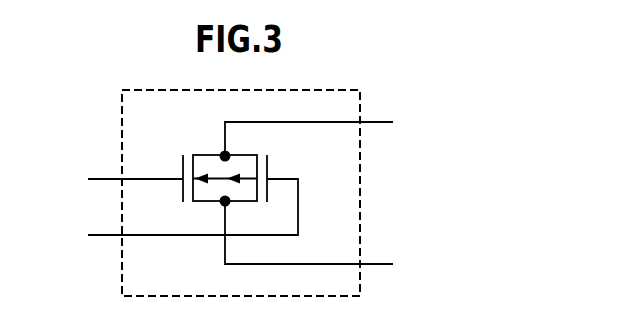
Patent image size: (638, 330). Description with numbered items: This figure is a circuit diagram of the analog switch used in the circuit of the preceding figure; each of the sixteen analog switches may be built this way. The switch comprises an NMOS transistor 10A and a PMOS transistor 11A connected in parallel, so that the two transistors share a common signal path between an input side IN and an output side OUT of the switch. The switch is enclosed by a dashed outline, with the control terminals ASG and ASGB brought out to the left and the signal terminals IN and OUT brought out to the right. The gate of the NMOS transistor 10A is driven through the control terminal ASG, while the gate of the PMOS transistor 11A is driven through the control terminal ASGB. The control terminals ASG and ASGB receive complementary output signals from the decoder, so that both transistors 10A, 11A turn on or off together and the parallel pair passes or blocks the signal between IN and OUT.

The NMOS transistor 10A is at (183, 170).
The PMOS transistor 11A is at (292, 151).
The control terminal ASG is at (108, 180).
The control terminal ASGB is at (157, 213).
The input terminal IN is at (324, 133).
The output terminal OUT is at (338, 239).